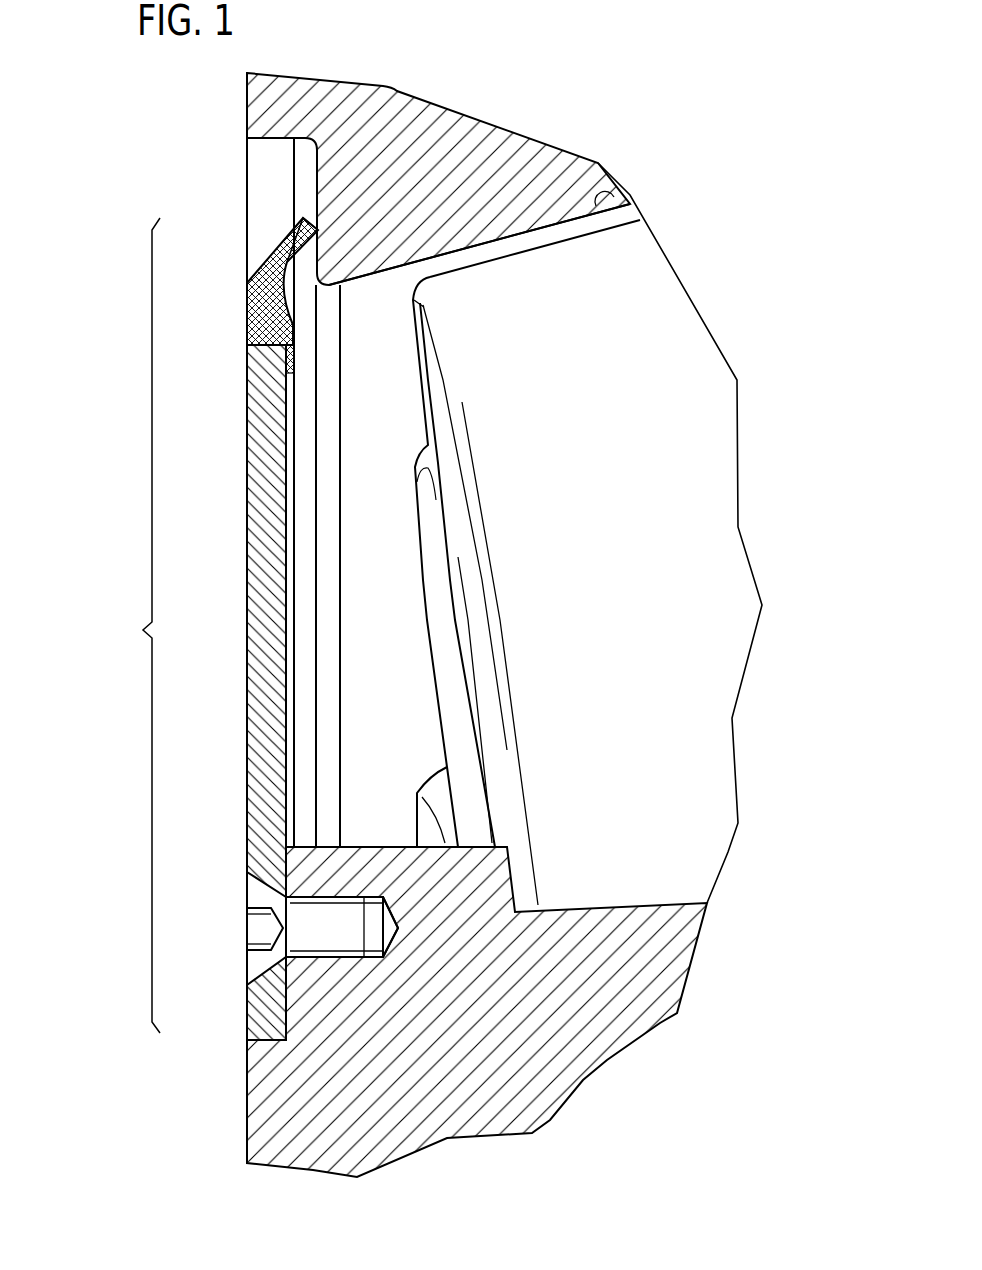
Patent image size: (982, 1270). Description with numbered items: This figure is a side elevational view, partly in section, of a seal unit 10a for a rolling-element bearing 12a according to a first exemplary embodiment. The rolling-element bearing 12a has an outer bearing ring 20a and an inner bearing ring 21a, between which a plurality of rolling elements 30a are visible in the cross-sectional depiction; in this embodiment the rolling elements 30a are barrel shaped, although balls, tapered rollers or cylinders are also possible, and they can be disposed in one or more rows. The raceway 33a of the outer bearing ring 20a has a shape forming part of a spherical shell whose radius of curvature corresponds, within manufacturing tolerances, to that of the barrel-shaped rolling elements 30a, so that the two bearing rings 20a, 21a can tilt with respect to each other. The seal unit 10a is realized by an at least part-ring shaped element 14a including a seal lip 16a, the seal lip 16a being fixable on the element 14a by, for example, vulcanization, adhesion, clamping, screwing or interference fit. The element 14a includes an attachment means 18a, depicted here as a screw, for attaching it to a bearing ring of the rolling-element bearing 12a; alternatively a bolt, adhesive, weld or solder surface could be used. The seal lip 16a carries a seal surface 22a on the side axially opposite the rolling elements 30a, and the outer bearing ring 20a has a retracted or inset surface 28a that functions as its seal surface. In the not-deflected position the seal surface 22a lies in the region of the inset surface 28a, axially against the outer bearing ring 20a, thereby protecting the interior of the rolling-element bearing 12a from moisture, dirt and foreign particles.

The seal unit 10a is at (128, 625).
The rolling-element bearing 12a is at (742, 255).
The at least part-ring shaped element 14a is at (257, 762).
The seal lip 16a is at (249, 313).
The attachment means 18a is at (300, 920).
The outer bearing ring 20a is at (447, 127).
The inner bearing ring 21a is at (674, 972).
The seal surface 22a is at (277, 247).
The inset surface 28a is at (330, 165).
The rolling elements 30a is at (727, 512).
The raceway 33a is at (613, 194).